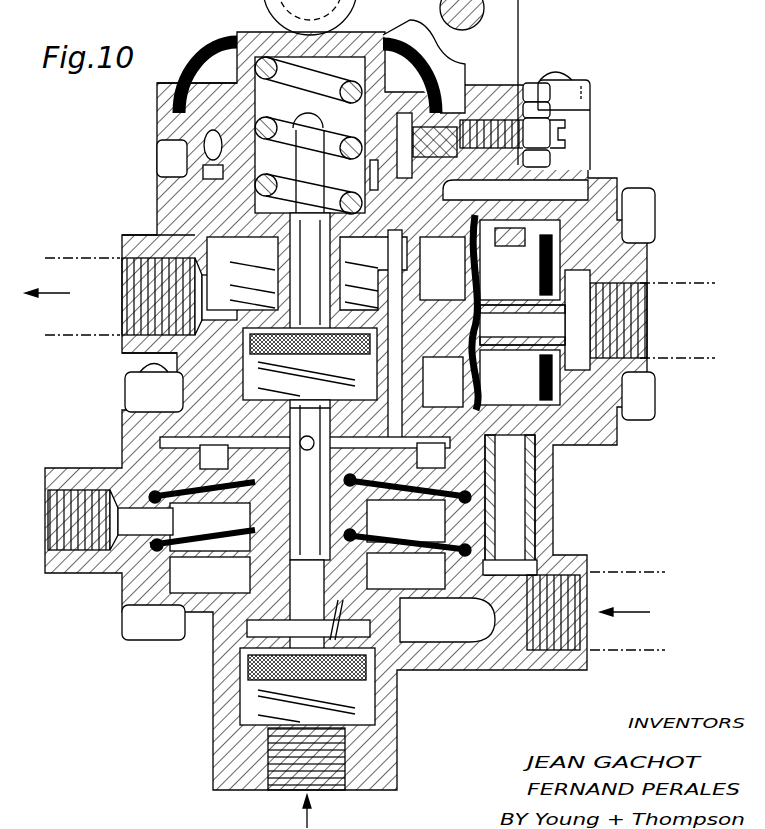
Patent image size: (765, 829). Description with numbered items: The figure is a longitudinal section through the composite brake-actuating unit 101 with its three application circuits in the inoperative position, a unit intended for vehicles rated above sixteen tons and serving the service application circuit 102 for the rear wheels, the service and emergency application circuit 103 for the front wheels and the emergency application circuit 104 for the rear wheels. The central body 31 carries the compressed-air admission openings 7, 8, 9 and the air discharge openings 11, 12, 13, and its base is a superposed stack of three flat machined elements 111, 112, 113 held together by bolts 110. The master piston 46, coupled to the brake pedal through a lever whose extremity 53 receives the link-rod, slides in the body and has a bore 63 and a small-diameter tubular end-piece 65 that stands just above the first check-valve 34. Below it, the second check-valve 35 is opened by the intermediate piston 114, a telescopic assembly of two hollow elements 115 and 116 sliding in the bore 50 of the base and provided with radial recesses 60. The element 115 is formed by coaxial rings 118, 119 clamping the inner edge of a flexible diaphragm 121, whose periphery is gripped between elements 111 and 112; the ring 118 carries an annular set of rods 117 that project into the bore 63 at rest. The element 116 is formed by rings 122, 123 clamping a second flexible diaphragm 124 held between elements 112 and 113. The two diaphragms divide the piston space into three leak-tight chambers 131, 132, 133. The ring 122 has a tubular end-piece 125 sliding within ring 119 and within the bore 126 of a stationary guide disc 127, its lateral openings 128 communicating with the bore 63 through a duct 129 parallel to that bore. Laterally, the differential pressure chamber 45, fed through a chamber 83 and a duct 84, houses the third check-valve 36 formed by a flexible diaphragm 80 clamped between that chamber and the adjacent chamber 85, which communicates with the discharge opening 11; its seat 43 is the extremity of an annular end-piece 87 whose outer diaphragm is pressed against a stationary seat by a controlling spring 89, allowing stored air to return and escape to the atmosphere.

The compressed-air admission opening 7 is at (330, 372).
The compressed-air admission opening 8 is at (300, 768).
The compressed-air admission opening 9 is at (60, 533).
The air discharge opening 11 is at (130, 293).
The air discharge opening 12 is at (625, 316).
The air discharge opening 13 is at (575, 633).
The central body 31 is at (120, 352).
The check-valve 34 is at (270, 375).
The check-valve 35 is at (232, 685).
The check-valve 36 is at (472, 330).
The seat 43 is at (475, 290).
The differential pressure chamber 45 is at (495, 218).
The master piston 46 is at (210, 226).
The bore 50 is at (240, 640).
The extremity of lever 53 is at (168, 128).
The radial recesses 60 is at (345, 614).
The bore 63 is at (210, 246).
The tubular end-piece 65 is at (325, 318).
The flexible diaphragm 80 is at (476, 262).
The chamber 83 is at (482, 640).
The duct 84 is at (515, 492).
The chamber 85 is at (442, 322).
The annular end-piece 87 is at (560, 305).
The controlling spring 89 is at (515, 372).
The composite brake-actuating unit 101 is at (607, 130).
The service application circuit 102 is at (66, 258).
The service and emergency application circuit 103 is at (633, 572).
The emergency application circuit 104 is at (655, 358).
The bolts 110 is at (130, 630).
The flat machined element 111 is at (560, 455).
The flat machined element 112 is at (555, 526).
The flat machined element 113 is at (410, 658).
The intermediate piston 114 is at (190, 455).
The hollow element 115 is at (245, 516).
The hollow element 116 is at (255, 571).
The rods 117 is at (378, 257).
The ring 118 is at (428, 463).
The ring 119 is at (365, 515).
The flexible diaphragm 121 is at (202, 486).
The ring 122 is at (372, 525).
The ring 123 is at (375, 562).
The flexible diaphragm 124 is at (210, 527).
The tubular end-piece 125 is at (310, 480).
The bore 126 is at (310, 415).
The guide disc 127 is at (178, 428).
The lateral openings 128 is at (308, 450).
The duct 129 is at (400, 375).
The chamber 131 is at (490, 460).
The chamber 132 is at (500, 526).
The chamber 133 is at (432, 592).